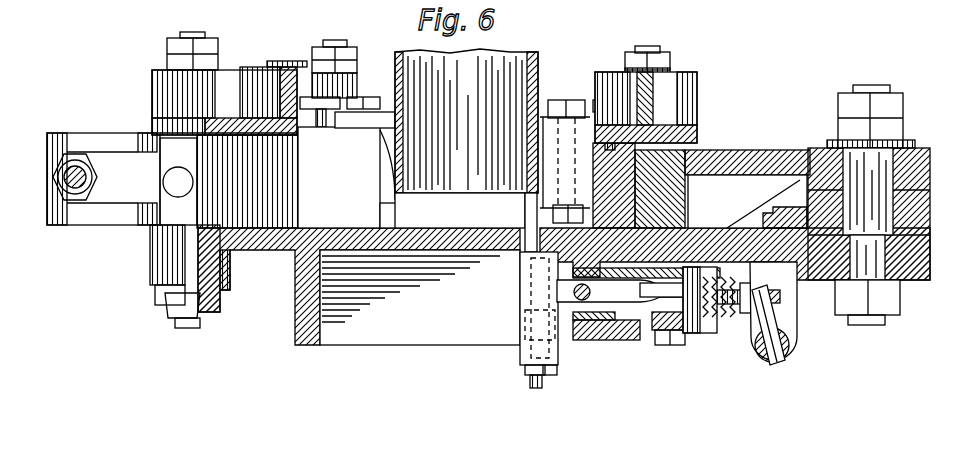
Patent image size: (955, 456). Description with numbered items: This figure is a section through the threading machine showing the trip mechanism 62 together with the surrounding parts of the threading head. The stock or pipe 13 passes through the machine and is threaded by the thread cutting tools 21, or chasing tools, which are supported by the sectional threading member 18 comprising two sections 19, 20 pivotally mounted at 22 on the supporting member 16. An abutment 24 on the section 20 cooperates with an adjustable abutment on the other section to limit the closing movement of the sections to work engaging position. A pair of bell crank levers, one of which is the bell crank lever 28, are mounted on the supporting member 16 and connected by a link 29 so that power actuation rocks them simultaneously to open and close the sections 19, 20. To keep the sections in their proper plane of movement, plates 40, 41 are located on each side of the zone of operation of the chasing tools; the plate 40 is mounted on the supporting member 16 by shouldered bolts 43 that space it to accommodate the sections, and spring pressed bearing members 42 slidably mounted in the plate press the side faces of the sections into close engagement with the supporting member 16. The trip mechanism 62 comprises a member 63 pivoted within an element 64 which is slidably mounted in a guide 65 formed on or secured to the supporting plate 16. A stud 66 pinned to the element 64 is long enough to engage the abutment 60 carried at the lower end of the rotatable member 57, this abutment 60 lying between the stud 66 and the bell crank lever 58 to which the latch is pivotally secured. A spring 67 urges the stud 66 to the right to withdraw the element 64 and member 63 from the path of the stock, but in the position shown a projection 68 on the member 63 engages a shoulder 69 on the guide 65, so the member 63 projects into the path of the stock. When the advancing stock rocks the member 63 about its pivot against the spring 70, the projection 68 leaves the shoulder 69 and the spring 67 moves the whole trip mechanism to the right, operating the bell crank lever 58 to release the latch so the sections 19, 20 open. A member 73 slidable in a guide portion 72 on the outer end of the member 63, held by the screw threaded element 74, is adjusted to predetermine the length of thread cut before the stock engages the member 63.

The stock or pipe 13 is at (536, 68).
The supporting member 16 is at (270, 252).
The sectional threading member 18 is at (912, 150).
The section 19 is at (747, 201).
The section 20 is at (742, 146).
The thread cutting tools 21 is at (387, 157).
The pivot 22 is at (856, 90).
The abutment 24 is at (170, 182).
The bell crank lever 28 is at (105, 137).
The link 29 is at (66, 182).
The plate 40 is at (699, 110).
The plate 41 is at (278, 98).
The bearing members 42 is at (290, 62).
The shouldered bolts 43 is at (652, 48).
The rotatable member 57 is at (788, 350).
The bell crank lever 58 is at (773, 283).
The abutment 60 is at (780, 318).
The trip mechanism 62 is at (696, 321).
The tripping member 63 is at (622, 340).
The slidable element 64 is at (556, 376).
The guide 65 is at (603, 325).
The stud 66 is at (722, 318).
The spring 67 is at (718, 282).
The projection 68 is at (655, 305).
The shoulder 69 is at (676, 330).
The spring 70 is at (622, 302).
The guide portion 72 is at (524, 315).
The adjustable member 73 is at (524, 208).
The screw threaded element 74 is at (524, 378).